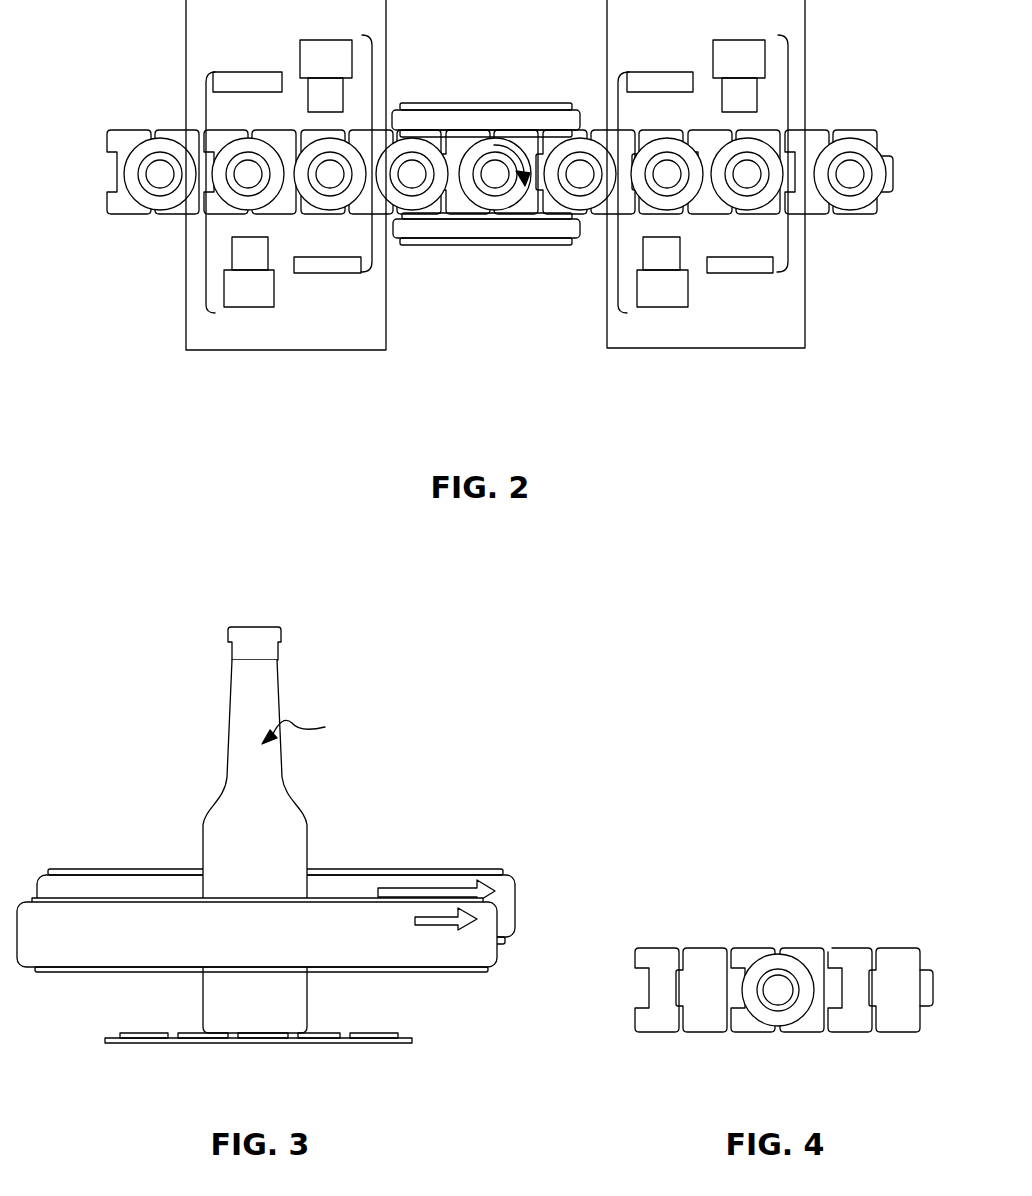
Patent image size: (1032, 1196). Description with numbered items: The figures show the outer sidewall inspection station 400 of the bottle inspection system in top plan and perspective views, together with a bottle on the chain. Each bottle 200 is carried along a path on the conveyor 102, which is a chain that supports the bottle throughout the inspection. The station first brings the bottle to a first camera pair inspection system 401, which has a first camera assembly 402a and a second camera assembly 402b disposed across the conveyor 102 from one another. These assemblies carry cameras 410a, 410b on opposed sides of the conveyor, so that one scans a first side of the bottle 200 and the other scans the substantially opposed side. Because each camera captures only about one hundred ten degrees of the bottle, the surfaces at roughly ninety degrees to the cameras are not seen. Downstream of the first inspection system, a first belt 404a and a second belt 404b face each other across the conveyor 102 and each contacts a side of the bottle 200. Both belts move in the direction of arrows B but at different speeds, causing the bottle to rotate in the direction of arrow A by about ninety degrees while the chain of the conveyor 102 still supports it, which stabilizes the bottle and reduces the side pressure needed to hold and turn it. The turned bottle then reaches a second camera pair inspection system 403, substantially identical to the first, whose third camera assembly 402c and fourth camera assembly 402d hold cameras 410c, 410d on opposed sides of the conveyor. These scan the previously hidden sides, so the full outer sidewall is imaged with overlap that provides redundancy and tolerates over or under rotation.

In FIG. 2, the conveyor 102 is at (120, 138).
In FIG. 3, the conveyor 102 is at (365, 1043).
In FIG. 4, the conveyor 102 is at (883, 1018).
In FIG. 2, the bottle 200 is at (495, 178).
In FIG. 3, the bottle 200 is at (278, 680).
In FIG. 4, the bottle 200 is at (767, 972).
In FIG. 2, the outer sidewall inspection station 400 is at (471, 203).
In FIG. 2, the first camera pair inspection system 401 is at (279, 202).
In FIG. 2, the first camera assembly 402a is at (206, 293).
In FIG. 2, the second camera assembly 402b is at (380, 37).
In FIG. 2, the third camera assembly 402c is at (616, 305).
In FIG. 2, the fourth camera assembly 402d is at (795, 37).
In FIG. 2, the second camera pair inspection system 403 is at (718, 201).
In FIG. 2, the first belt 404a is at (550, 245).
In FIG. 3, the first belt 404a is at (447, 957).
In FIG. 2, the second belt 404b is at (550, 103).
In FIG. 3, the second belt 404b is at (440, 868).
In FIG. 2, the camera 410a is at (248, 308).
In FIG. 2, the camera 410b is at (327, 40).
In FIG. 2, the camera 410c is at (660, 308).
In FIG. 2, the camera 410d is at (740, 40).
In FIG. 2, the arrow A is at (517, 161).
In FIG. 3, the arrow A is at (302, 729).
In FIG. 3, the arrows B is at (491, 926).